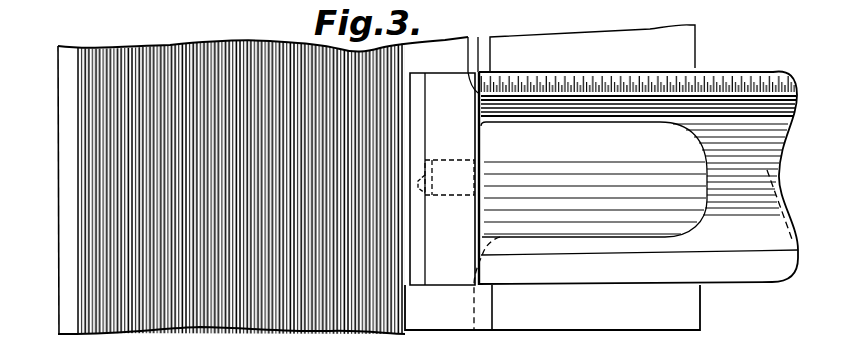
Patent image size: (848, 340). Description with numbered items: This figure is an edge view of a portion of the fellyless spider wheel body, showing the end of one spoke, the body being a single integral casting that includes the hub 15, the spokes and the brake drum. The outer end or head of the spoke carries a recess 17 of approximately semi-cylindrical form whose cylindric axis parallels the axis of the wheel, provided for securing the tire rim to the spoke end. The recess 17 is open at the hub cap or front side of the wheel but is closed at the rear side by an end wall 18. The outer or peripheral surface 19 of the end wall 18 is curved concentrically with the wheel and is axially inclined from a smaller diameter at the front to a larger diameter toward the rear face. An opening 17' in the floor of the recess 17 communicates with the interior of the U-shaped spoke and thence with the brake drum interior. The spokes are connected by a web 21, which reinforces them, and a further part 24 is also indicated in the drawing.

The hub 15 is at (675, 48).
The recess 17 is at (638, 157).
The opening 17' is at (594, 179).
The end wall 18 is at (435, 72).
The outer or peripheral surface 19 is at (442, 179).
The web 21 is at (480, 43).
The pin 24 is at (460, 184).